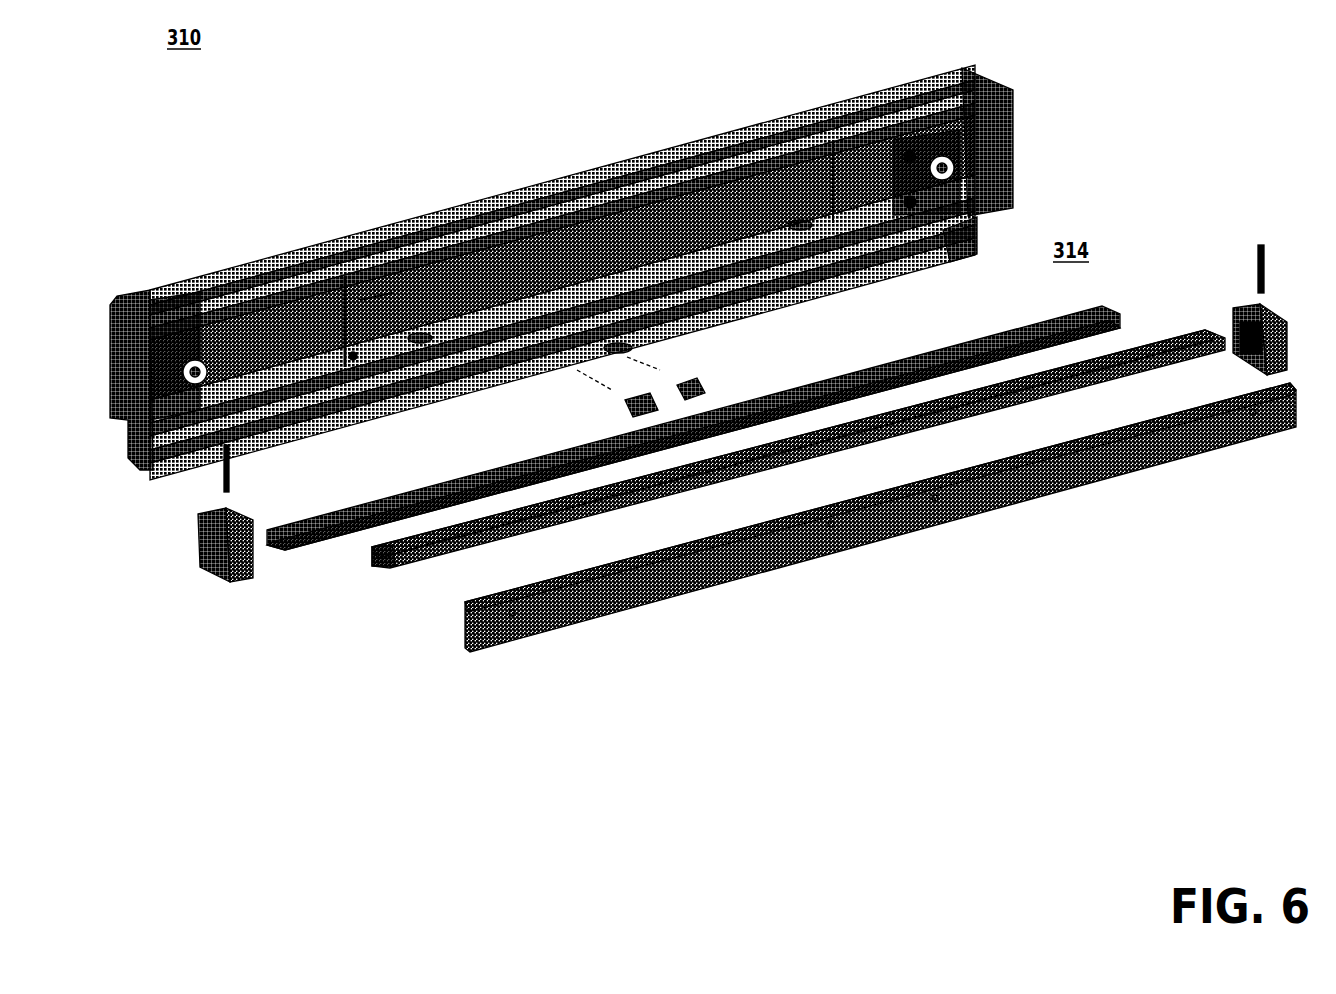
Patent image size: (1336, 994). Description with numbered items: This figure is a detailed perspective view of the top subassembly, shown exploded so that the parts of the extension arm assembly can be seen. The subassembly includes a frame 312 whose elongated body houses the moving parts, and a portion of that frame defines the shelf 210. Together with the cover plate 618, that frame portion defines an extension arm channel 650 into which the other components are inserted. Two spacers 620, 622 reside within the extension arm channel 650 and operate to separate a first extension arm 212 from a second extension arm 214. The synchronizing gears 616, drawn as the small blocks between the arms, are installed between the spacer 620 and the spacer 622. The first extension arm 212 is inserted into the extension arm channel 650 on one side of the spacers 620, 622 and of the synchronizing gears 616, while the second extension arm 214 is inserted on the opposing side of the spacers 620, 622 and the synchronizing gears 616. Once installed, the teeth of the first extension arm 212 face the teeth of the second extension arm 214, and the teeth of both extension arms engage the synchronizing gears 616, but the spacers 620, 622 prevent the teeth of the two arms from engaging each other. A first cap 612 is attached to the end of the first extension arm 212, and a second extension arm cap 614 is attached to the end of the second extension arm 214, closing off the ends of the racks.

The frame 312 is at (535, 183).
The shelf 210 is at (142, 470).
The first extension arm 212 is at (302, 555).
The second extension arm 214 is at (1130, 343).
The first cap 612 is at (220, 580).
The second extension arm cap 614 is at (1272, 317).
The synchronizing gears 616 is at (640, 392).
The cover plate 618 is at (685, 575).
The spacer 620 is at (407, 378).
The spacer 622 is at (922, 270).
The extension arm channel 650 is at (205, 455).